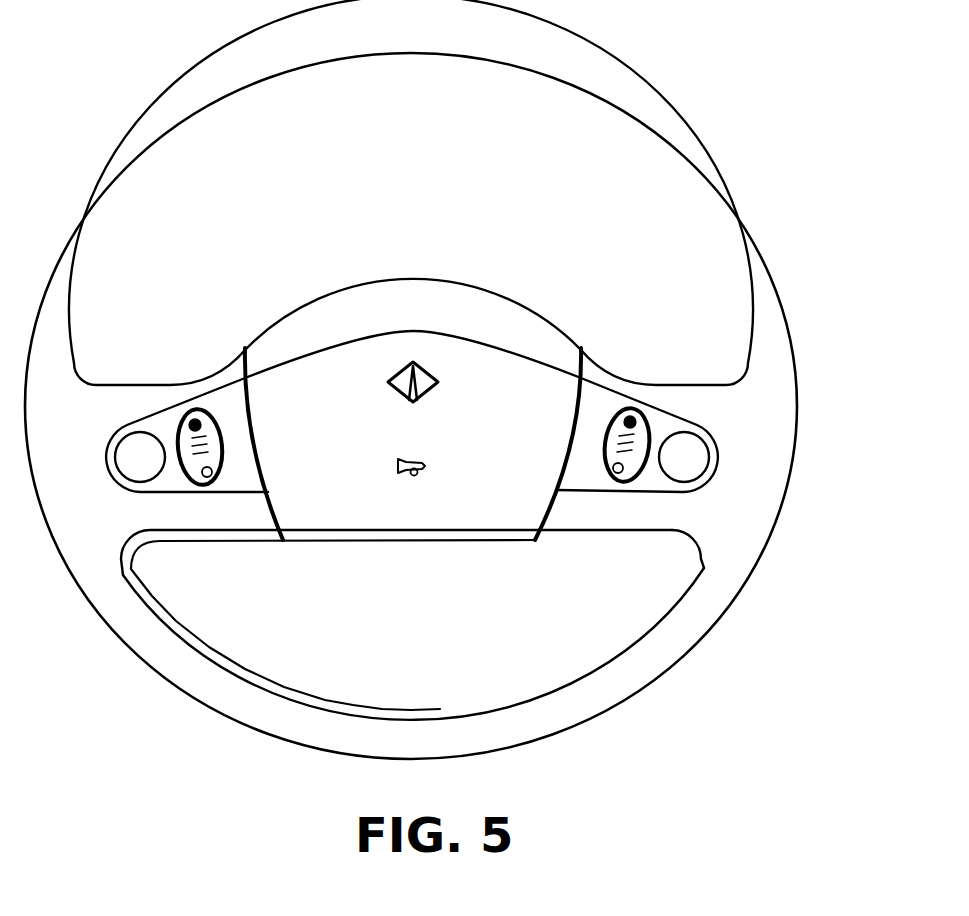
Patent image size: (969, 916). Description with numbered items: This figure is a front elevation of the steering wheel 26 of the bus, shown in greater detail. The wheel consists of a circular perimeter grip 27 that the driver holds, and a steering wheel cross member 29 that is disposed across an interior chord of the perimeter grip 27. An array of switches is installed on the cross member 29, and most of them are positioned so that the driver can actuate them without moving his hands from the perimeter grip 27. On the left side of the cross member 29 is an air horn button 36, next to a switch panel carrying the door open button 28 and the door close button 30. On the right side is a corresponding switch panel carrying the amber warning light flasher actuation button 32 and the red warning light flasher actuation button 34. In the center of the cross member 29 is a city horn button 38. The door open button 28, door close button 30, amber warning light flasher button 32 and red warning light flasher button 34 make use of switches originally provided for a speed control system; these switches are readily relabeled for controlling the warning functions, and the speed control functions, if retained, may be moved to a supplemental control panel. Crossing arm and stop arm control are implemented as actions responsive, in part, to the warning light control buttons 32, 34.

The steering wheel 26 is at (600, 97).
The perimeter grip 27 is at (723, 615).
The door open button 28 is at (195, 409).
The steering wheel cross member 29 is at (562, 540).
The door close button 30 is at (216, 483).
The amber warning light flasher actuation button 32 is at (627, 408).
The red warning light flasher actuation button 34 is at (619, 481).
The air horn button 36 is at (142, 473).
The city horn button 38 is at (414, 478).